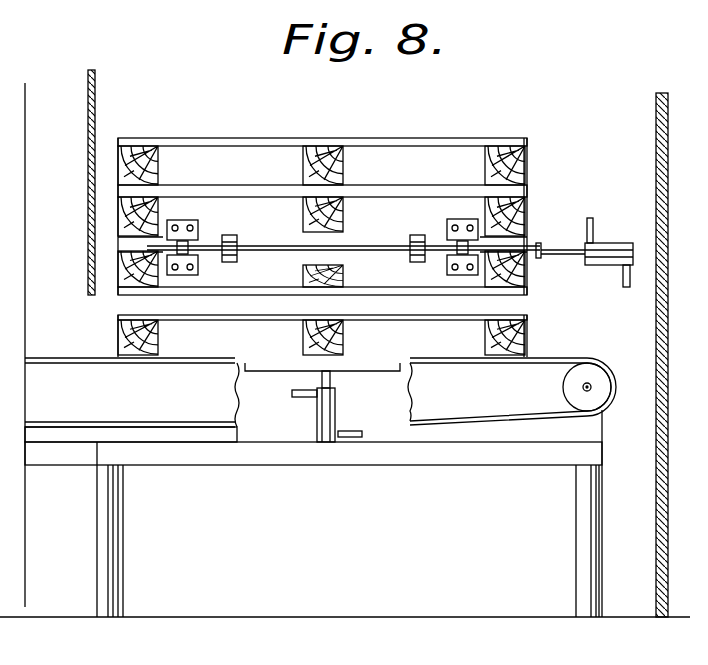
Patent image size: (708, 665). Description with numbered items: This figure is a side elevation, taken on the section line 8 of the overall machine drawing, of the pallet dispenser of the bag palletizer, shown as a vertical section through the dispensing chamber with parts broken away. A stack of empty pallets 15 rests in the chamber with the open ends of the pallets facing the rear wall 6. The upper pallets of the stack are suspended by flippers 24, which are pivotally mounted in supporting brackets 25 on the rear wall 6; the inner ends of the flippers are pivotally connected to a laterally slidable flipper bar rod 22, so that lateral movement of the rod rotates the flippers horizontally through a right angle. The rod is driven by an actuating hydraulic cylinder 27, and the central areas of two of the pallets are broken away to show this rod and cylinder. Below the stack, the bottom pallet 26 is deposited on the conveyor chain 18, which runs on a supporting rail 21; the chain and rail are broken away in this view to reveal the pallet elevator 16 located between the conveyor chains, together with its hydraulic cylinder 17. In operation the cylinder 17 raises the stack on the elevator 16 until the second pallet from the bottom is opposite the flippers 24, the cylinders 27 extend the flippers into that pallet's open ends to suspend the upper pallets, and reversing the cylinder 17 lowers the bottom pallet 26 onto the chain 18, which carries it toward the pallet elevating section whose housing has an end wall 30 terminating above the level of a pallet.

The rear wall 6 is at (322, 207).
The section line 8 is at (656, 555).
The stack of pallets 15 is at (347, 215).
The pallet elevator 16 is at (282, 364).
The hydraulic cylinder 17 is at (327, 406).
The conveyor chain 18 is at (212, 362).
The supporting rail 21 is at (545, 387).
The flipper bar rod 22 is at (268, 245).
The flippers 24 is at (197, 262).
The supporting brackets 25 is at (195, 229).
The bottom pallet 26 is at (527, 279).
The hydraulic cylinder 27 is at (608, 248).
The end wall 30 is at (88, 118).